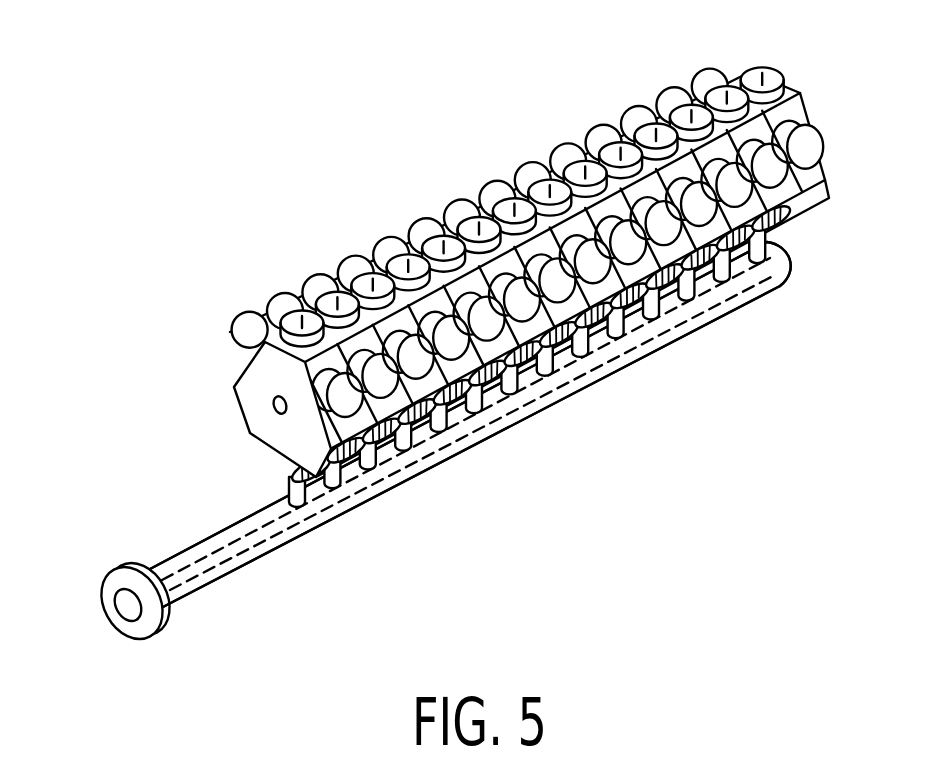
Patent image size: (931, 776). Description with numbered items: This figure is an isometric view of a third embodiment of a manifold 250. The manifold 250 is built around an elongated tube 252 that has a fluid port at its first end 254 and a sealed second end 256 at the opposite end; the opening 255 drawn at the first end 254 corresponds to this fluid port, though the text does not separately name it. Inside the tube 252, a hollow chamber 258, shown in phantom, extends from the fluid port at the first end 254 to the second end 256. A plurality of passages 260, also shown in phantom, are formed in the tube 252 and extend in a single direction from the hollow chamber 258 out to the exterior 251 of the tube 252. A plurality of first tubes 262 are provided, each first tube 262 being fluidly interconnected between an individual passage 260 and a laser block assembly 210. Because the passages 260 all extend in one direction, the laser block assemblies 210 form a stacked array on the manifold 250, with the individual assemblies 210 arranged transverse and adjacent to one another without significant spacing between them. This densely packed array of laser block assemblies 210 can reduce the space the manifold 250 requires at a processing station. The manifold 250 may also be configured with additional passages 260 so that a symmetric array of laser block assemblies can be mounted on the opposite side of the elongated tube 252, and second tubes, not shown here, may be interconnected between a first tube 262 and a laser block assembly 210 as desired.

The laser block assembly 210 is at (343, 282).
The manifold 250 is at (152, 448).
The exterior 251 is at (262, 510).
The elongated tube 252 is at (207, 590).
The first end 254 is at (130, 566).
The opening in tube end 255 is at (110, 612).
The second end 256 is at (793, 258).
The hollow chamber 258 is at (588, 348).
The passages 260 is at (366, 508).
The first tubes 262 is at (707, 283).